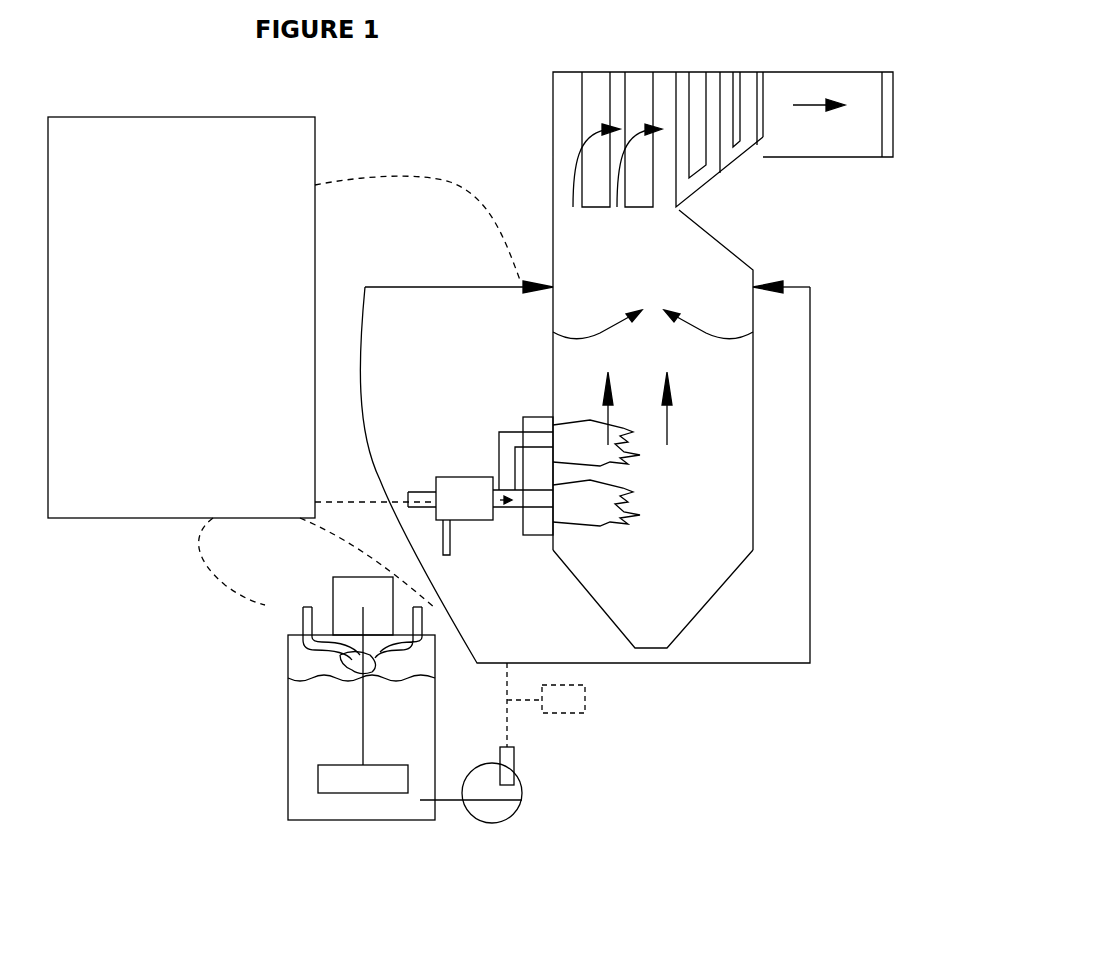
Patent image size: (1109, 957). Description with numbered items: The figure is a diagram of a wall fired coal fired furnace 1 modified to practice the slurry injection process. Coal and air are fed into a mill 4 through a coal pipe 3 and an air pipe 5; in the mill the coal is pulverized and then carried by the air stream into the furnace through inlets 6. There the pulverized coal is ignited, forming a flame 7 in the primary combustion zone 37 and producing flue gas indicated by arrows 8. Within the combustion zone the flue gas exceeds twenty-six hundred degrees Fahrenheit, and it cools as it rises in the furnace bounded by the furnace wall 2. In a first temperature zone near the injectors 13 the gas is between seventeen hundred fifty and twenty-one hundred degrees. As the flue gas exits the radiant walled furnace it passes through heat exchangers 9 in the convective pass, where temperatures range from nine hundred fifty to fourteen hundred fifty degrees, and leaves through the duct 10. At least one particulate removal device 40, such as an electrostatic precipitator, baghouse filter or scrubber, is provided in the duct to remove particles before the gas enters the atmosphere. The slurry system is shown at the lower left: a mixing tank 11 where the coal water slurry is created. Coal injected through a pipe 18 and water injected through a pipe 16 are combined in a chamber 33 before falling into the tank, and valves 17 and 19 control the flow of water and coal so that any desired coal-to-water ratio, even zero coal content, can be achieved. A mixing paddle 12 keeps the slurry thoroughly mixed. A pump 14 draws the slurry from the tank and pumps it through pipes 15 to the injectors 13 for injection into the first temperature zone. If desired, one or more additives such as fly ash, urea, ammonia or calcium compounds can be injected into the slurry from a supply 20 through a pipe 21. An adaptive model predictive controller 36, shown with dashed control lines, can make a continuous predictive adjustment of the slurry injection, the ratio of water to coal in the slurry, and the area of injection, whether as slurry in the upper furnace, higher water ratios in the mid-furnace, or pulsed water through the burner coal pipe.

The coal fired furnace 1 is at (723, 360).
The furnace wall 2 is at (553, 390).
The coal pipe 3 is at (420, 490).
The mill 4 is at (480, 477).
The air pipe 5 is at (450, 535).
The inlets 6 is at (545, 437).
The flame 7 is at (596, 473).
The arrows indicating flue gas 8 is at (612, 412).
The heat exchangers 9 is at (590, 207).
The duct 10 is at (830, 110).
The mixing tank 11 is at (361, 727).
The mixing paddle 12 is at (345, 765).
The injectors 13 is at (553, 272).
The pump 14 is at (515, 797).
The pipes 15 is at (360, 380).
The water pipe 16 is at (300, 625).
The water valve 17 is at (300, 615).
The coal pipe 18 is at (402, 625).
The coal valve 19 is at (428, 612).
The additive supply 20 is at (585, 697).
The additive pipe 21 is at (520, 705).
The chamber 33 is at (343, 664).
The adaptive model predictive controller 36 is at (135, 518).
The primary combustion zone 37 is at (661, 468).
The particulate removal device 40 is at (895, 140).